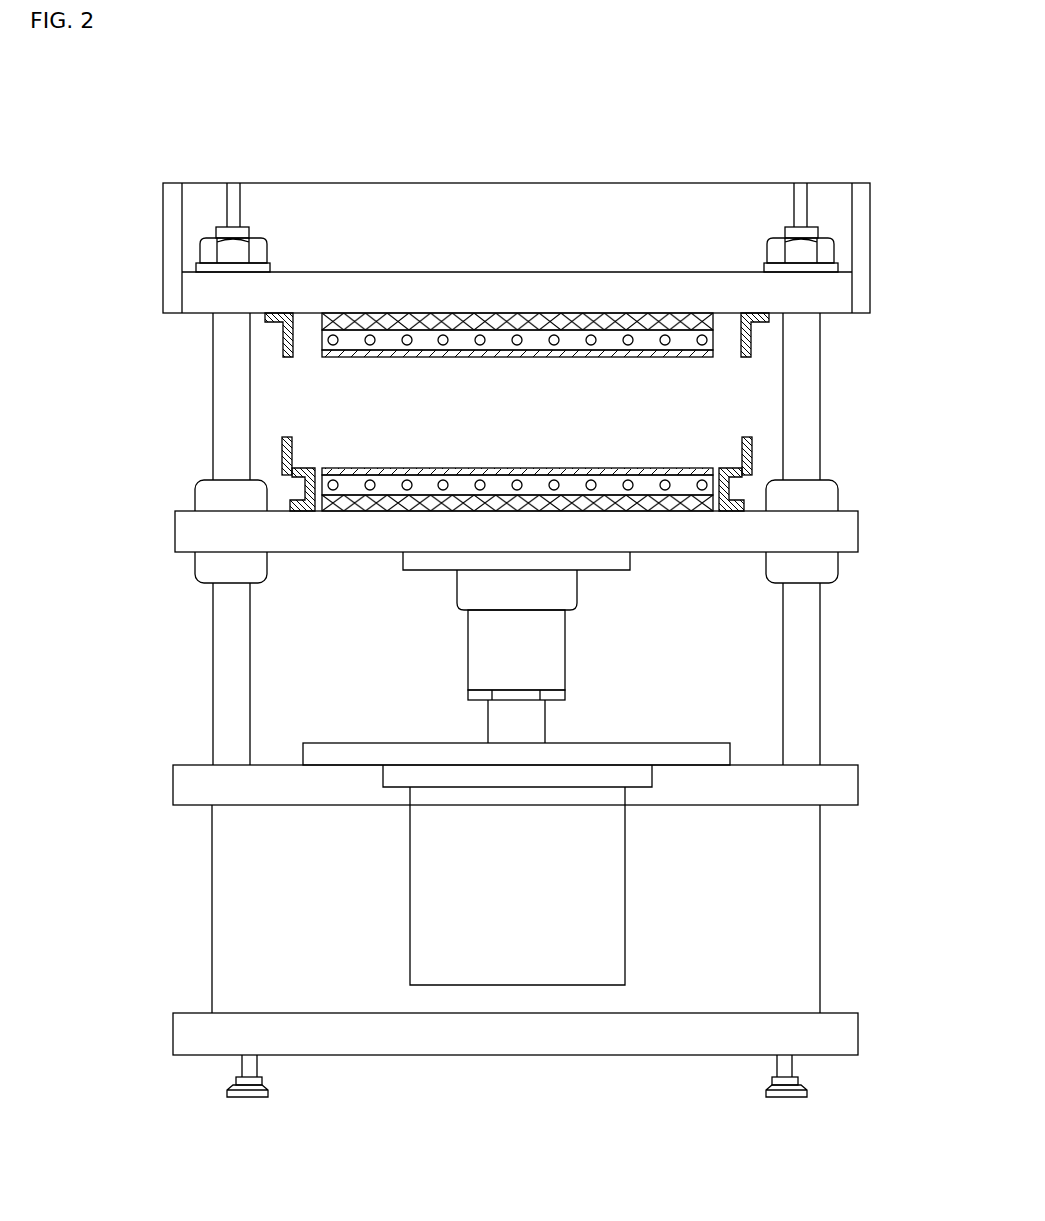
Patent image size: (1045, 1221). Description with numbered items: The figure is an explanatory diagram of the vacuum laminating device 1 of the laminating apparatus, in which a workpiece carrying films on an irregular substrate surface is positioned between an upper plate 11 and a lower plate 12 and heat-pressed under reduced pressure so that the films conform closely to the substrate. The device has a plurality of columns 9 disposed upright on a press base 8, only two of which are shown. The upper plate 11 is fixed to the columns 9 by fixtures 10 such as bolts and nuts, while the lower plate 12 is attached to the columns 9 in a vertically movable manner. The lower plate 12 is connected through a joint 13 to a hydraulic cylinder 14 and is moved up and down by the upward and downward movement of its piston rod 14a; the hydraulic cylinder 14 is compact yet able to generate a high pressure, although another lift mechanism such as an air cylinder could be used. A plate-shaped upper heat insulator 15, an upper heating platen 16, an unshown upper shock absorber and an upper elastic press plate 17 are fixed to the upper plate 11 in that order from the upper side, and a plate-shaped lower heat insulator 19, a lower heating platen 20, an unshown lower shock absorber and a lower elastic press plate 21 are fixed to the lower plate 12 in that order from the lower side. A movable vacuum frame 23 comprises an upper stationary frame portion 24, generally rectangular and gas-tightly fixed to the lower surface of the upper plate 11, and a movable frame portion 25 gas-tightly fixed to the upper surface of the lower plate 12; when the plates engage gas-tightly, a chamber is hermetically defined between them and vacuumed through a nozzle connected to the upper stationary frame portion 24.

The vacuum laminating device 1 is at (884, 203).
The press base 8 is at (235, 906).
The columns 9 is at (225, 662).
The fixtures 10 is at (266, 243).
The upper plate 11 is at (843, 297).
The lower plate 12 is at (843, 532).
The joint 13 is at (480, 656).
The hydraulic cylinder 14 is at (598, 918).
The piston rod 14a is at (537, 723).
The upper heat insulator 15 is at (631, 320).
The upper heating platen 16 is at (495, 342).
The upper elastic press plate 17 is at (640, 358).
The lower heat insulator 19 is at (348, 503).
The lower heating platen 20 is at (683, 488).
The lower elastic press plate 21 is at (456, 470).
The movable vacuum frame 23 is at (132, 347).
The upper stationary frame portion 24 is at (283, 338).
The movable frame portion 25 is at (283, 463).